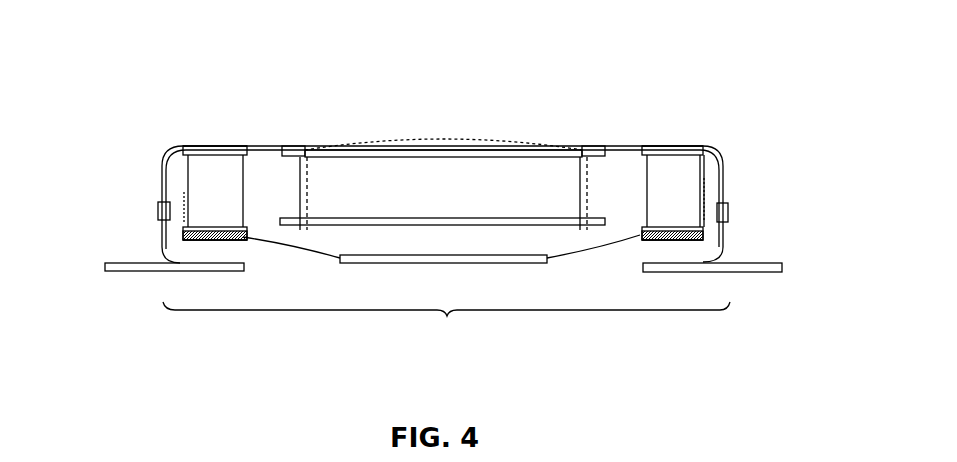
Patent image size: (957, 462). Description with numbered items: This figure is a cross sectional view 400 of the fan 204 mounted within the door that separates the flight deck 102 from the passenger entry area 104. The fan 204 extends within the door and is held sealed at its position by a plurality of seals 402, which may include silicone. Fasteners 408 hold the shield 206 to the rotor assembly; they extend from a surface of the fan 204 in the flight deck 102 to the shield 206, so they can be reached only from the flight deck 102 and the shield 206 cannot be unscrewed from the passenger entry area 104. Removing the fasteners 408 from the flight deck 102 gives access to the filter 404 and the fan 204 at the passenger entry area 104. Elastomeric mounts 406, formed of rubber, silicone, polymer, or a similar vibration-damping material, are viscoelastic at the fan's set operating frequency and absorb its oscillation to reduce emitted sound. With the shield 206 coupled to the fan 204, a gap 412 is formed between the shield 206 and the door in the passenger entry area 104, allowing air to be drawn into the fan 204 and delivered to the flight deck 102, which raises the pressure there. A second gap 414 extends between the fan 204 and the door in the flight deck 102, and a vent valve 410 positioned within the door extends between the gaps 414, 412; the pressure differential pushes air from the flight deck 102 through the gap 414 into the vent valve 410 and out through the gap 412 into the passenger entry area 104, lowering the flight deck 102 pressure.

The charging assembly cross-section 400 is at (131, 46).
The flight deck 102 is at (81, 161).
The passenger entry area 104 is at (849, 169).
The fan 204 is at (217, 196).
The shield 206 is at (736, 162).
The seals 402 is at (181, 157).
The filter 404 is at (703, 166).
The elastomeric mounts 406 is at (290, 147).
The fasteners 408 is at (158, 212).
The vent valve 410 is at (247, 257).
The gap 412 is at (736, 256).
The gap 414 is at (256, 271).